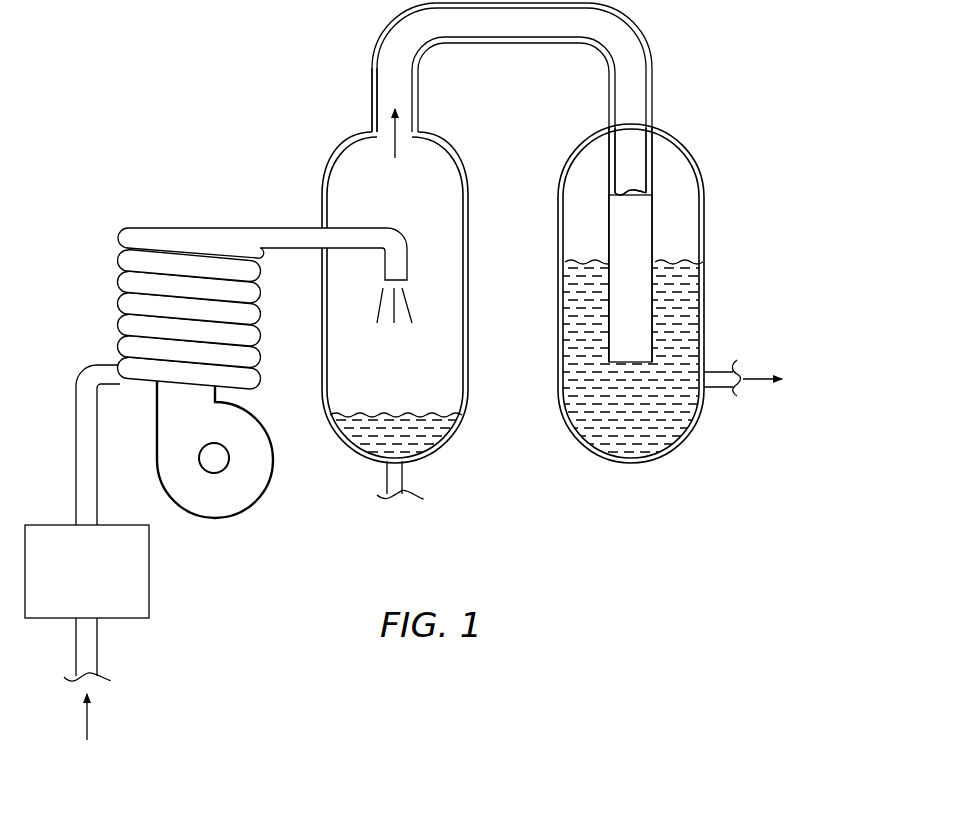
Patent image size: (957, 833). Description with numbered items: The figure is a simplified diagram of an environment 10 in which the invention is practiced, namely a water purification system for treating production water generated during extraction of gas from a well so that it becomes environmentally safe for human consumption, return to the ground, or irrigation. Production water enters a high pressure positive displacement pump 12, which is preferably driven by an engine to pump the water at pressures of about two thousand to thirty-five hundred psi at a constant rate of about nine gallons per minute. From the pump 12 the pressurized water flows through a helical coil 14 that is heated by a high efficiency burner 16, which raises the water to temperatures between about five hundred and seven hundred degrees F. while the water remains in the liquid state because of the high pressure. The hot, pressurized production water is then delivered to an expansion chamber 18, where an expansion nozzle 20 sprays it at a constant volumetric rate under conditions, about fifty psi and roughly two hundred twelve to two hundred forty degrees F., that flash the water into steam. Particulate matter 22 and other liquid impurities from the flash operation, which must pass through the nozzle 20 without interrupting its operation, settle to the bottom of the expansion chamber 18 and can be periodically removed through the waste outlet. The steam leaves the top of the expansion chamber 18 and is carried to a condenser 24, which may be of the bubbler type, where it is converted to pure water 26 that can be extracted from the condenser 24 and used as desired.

The environment 10 is at (231, 120).
The high pressure positive displacement pump 12 is at (52, 620).
The helical coil 14 is at (118, 298).
The high efficiency burner 16 is at (214, 518).
The expansion chamber 18 is at (470, 258).
The expansion nozzle 20 is at (407, 272).
The particulate matter 22 is at (395, 410).
The condenser 24 is at (703, 175).
The pure water 26 is at (673, 262).